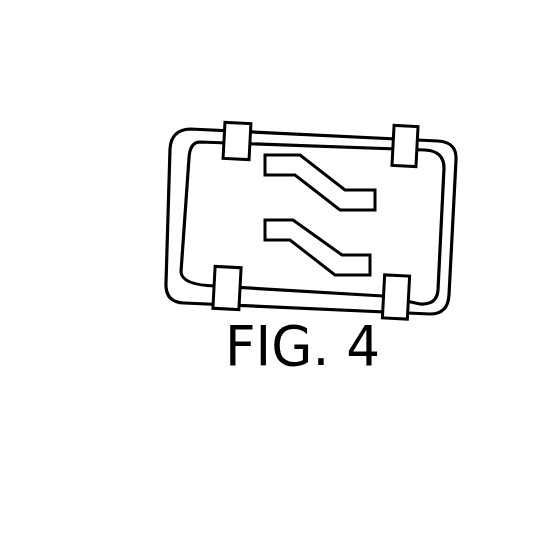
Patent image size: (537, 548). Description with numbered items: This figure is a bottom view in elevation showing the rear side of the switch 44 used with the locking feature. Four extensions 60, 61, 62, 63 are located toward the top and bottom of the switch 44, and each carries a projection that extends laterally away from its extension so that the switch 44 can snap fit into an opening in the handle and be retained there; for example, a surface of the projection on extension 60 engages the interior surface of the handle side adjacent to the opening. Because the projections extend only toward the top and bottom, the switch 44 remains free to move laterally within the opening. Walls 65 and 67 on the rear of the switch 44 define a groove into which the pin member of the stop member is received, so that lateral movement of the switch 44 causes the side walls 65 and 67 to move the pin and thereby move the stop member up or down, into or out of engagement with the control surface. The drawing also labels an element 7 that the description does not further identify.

The switch 44 is at (405, 63).
The wall 67 is at (287, 122).
The wall 65 is at (260, 222).
The extension 62 is at (217, 124).
The extension 63 is at (418, 128).
The extension 60 is at (210, 308).
The extension 61 is at (433, 318).
The conductive strips 7 is at (330, 227).